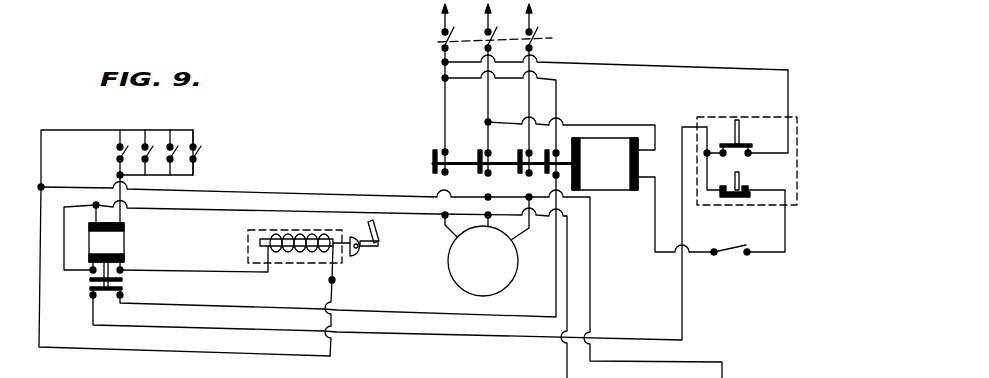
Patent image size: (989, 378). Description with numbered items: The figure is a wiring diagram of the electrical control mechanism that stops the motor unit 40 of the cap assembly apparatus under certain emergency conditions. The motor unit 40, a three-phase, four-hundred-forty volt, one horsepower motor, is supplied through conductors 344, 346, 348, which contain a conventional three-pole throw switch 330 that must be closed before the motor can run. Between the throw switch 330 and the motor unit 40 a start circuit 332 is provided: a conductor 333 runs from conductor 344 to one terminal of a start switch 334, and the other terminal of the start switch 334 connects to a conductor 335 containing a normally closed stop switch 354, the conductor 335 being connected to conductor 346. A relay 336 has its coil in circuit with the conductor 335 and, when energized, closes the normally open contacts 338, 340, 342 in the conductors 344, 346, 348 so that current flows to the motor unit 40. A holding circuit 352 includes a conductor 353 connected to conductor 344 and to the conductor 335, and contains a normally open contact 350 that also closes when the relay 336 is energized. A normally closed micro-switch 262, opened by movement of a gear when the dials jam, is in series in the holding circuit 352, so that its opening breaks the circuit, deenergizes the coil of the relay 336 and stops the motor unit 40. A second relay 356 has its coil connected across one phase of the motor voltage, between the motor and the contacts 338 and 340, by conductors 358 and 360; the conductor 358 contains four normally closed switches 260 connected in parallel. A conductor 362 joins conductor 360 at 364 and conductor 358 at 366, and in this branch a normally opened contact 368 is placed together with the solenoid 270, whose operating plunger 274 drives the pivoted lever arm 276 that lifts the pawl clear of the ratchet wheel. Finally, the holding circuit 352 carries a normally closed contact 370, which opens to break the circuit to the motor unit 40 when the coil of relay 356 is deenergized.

The motor unit 40 is at (450, 267).
The normally closed switches 260 is at (123, 156).
The micro-switch 262 is at (730, 257).
The solenoid 270 is at (290, 265).
The operating plunger 274 is at (363, 252).
The lever arm 276 is at (374, 243).
The 3-pole throw switch 330 is at (547, 40).
The start circuit 332 is at (639, 61).
The conductor 333 is at (700, 68).
The start switch 334 is at (742, 133).
The conductor 335 is at (783, 236).
The relay 336 is at (598, 190).
The normally open contact 338 is at (434, 155).
The normally open contact 340 is at (478, 152).
The normally open contact 342 is at (520, 152).
The conductor 344 is at (443, 107).
The conductor 346 is at (487, 113).
The conductor 348 is at (530, 115).
The normally open contact 350 is at (549, 180).
The holding circuit 352 is at (549, 284).
The conductor 353 is at (557, 113).
The stop switch 354 is at (740, 184).
The relay 356 is at (124, 250).
The conductor 358 is at (278, 193).
The conductor 360 is at (216, 213).
The conductor 362 is at (64, 262).
The connection point 364 is at (96, 204).
The connection point 366 is at (42, 186).
The normally opened contact 368 is at (123, 283).
The normally closed contact 370 is at (92, 297).